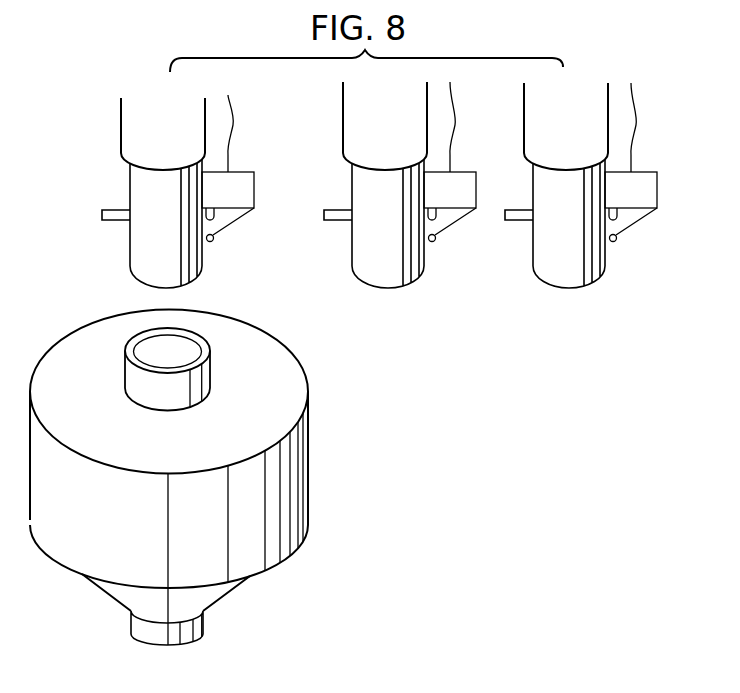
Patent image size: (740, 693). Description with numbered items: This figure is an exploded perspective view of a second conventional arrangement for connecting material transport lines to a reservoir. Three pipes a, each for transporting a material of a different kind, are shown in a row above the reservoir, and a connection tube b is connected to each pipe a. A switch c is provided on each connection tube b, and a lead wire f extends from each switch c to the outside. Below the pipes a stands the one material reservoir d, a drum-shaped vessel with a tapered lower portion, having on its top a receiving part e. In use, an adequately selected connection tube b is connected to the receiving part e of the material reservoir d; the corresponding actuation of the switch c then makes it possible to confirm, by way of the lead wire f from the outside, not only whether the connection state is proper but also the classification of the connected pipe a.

The pipe a is at (128, 135).
The connection tube b is at (130, 258).
The switch c is at (252, 200).
The material reservoir d is at (306, 474).
The receiving part e is at (210, 366).
The lead wire f is at (232, 149).